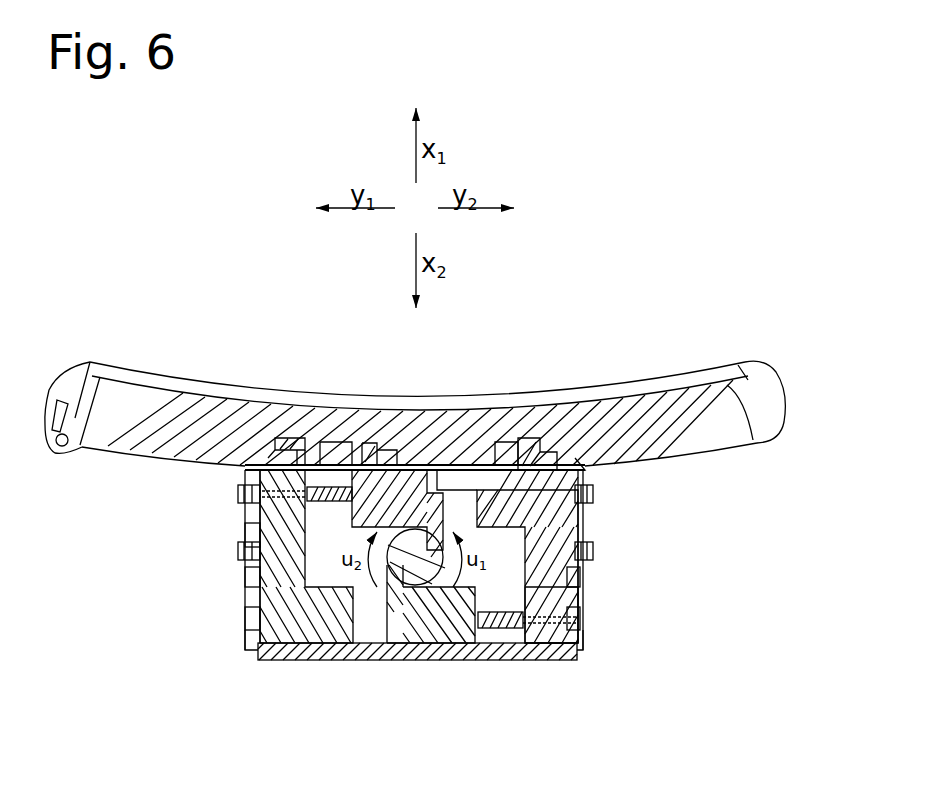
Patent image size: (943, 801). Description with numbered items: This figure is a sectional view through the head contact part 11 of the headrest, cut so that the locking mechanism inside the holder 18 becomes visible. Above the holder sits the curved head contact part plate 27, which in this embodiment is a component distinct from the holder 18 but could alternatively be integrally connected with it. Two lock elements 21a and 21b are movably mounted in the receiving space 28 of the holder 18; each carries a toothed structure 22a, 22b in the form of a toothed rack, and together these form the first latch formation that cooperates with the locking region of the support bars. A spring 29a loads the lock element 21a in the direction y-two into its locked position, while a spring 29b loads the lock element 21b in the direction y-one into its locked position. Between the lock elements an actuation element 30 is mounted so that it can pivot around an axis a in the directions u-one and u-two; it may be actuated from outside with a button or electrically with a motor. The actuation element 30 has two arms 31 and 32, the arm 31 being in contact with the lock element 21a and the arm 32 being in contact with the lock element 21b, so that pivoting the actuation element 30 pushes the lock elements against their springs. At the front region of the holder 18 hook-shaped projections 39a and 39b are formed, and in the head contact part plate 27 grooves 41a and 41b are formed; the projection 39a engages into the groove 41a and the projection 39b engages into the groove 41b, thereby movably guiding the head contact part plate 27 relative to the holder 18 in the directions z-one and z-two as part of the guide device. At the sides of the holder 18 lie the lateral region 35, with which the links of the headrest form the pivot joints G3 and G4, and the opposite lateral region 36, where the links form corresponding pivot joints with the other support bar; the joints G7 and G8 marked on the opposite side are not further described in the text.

The head contact part 11 is at (706, 377).
The head contact part plate 27 is at (758, 385).
The holder 18 is at (280, 662).
The lock element 21a is at (555, 655).
The lock element 21b is at (440, 655).
The toothed structure 22a is at (597, 600).
The toothed structure 22b is at (237, 600).
The receiving space 28 is at (487, 445).
The spring 29a is at (500, 633).
The spring 29b is at (325, 463).
The actuation element 30 is at (397, 465).
The arm 31 is at (444, 480).
The arm 32 is at (400, 612).
The lateral region 35 is at (595, 637).
The lateral region 36 is at (237, 651).
The hook-shaped projection 39a is at (572, 462).
The hook-shaped projection 39b is at (297, 456).
The groove 41a is at (546, 440).
The groove 41b is at (279, 439).
The axis a is at (395, 576).
The pivot joint G3 is at (237, 495).
The pivot joint G4 is at (237, 550).
The gap G7 is at (597, 495).
The gap G8 is at (597, 548).